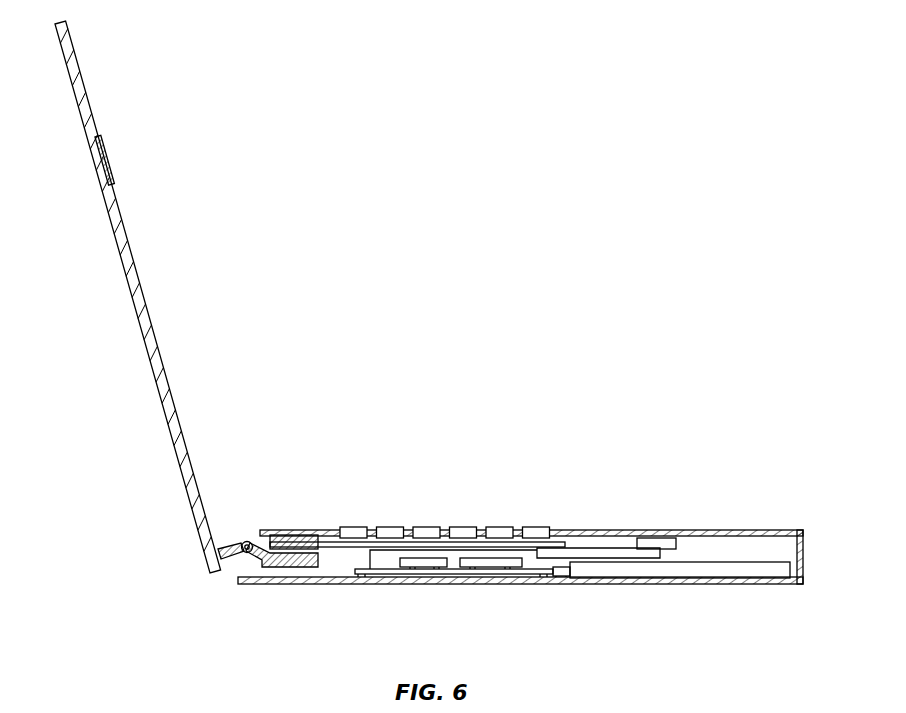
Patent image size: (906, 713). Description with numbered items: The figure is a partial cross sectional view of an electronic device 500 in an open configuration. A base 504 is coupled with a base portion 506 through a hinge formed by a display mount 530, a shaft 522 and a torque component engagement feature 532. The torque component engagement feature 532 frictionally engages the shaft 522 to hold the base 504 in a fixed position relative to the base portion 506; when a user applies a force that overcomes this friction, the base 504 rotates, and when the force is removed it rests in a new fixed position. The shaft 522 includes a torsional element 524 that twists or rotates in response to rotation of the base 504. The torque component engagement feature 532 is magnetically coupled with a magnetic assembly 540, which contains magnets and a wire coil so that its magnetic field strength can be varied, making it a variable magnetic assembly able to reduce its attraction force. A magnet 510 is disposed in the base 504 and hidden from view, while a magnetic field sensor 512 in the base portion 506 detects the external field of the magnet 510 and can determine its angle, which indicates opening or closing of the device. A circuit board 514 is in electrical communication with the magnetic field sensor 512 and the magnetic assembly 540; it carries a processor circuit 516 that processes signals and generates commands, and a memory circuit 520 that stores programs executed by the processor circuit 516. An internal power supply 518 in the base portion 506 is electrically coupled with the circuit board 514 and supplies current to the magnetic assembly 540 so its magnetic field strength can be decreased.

The electronic device 500 is at (756, 126).
The base 504 is at (147, 303).
The base portion 506 is at (778, 530).
The magnet 510 is at (106, 160).
The magnetic field sensor 512 is at (638, 542).
The circuit board 514 is at (557, 577).
The processor circuit 516 is at (500, 569).
The internal power supply 518 is at (710, 562).
The memory circuit 520 is at (422, 569).
The shaft 522 is at (262, 531).
The torsional element 524 is at (232, 563).
The display mount 530 is at (242, 541).
The torque component engagement feature 532 is at (286, 568).
The magnetic assembly 540 is at (328, 531).